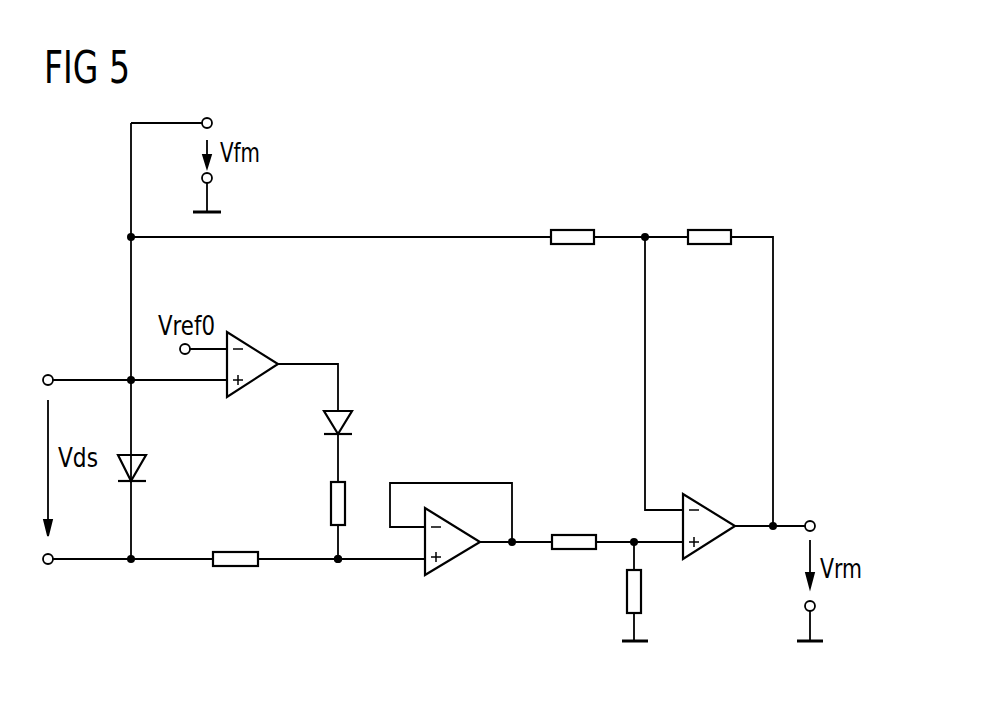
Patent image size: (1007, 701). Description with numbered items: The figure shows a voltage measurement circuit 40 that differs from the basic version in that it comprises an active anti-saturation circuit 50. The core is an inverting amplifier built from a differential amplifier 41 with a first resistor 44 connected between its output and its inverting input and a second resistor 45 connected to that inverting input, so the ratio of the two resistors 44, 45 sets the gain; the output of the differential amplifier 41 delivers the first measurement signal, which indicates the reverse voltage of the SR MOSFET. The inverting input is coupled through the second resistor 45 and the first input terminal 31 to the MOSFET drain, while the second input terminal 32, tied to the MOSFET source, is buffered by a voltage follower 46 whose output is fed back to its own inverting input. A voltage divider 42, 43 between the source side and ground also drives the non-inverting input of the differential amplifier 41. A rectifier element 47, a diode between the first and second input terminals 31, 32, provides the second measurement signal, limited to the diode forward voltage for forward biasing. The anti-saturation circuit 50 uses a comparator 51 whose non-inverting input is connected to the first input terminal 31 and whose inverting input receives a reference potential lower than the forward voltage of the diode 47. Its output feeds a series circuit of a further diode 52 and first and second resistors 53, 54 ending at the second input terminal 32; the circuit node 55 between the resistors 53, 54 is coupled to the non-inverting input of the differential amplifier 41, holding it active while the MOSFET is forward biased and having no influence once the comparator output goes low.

The first input terminal 31 is at (52, 373).
The second input terminal 32 is at (52, 566).
The voltage measurement circuit 40 is at (800, 300).
The differential amplifier 41 is at (712, 546).
The voltage divider resistor 42 is at (573, 532).
The voltage divider resistor 43 is at (627, 593).
The first resistor 44 is at (710, 246).
The second resistor 45 is at (572, 228).
The voltage follower 46 is at (453, 562).
The rectifier element (diode) 47 is at (146, 470).
The anti-saturation circuit 50 is at (362, 340).
The comparator 51 is at (250, 345).
The further diode 52 is at (325, 426).
The first resistor of series circuit 53 is at (331, 503).
The second resistor of series circuit 54 is at (236, 567).
The circuit node 55 is at (338, 568).